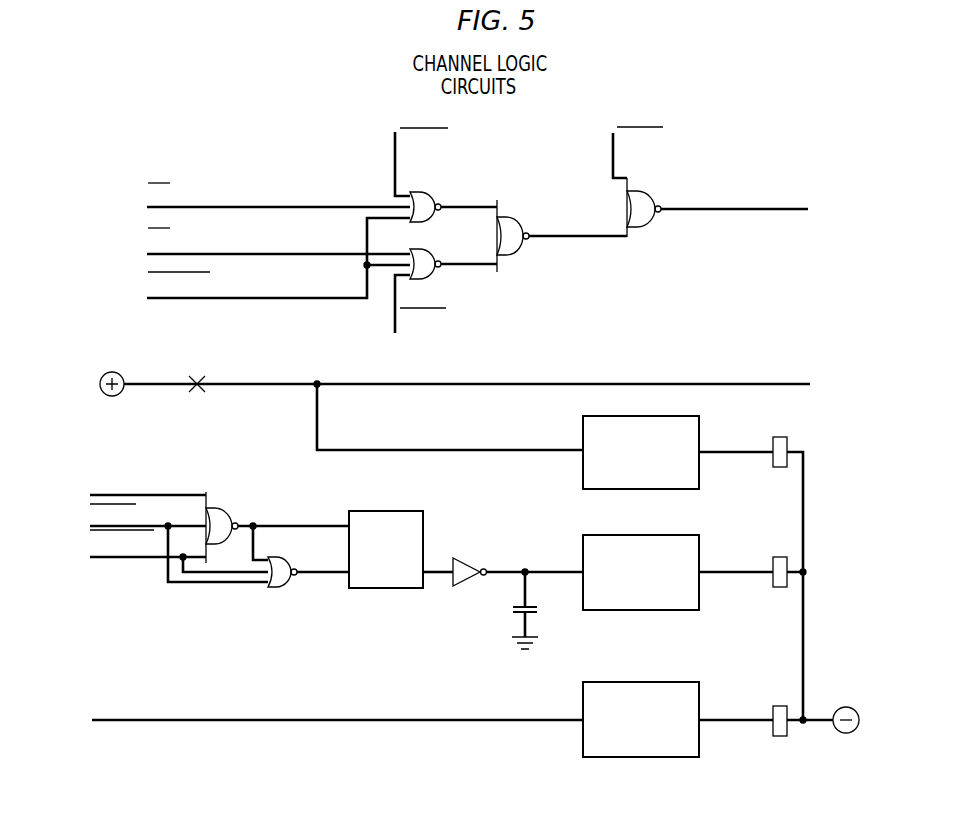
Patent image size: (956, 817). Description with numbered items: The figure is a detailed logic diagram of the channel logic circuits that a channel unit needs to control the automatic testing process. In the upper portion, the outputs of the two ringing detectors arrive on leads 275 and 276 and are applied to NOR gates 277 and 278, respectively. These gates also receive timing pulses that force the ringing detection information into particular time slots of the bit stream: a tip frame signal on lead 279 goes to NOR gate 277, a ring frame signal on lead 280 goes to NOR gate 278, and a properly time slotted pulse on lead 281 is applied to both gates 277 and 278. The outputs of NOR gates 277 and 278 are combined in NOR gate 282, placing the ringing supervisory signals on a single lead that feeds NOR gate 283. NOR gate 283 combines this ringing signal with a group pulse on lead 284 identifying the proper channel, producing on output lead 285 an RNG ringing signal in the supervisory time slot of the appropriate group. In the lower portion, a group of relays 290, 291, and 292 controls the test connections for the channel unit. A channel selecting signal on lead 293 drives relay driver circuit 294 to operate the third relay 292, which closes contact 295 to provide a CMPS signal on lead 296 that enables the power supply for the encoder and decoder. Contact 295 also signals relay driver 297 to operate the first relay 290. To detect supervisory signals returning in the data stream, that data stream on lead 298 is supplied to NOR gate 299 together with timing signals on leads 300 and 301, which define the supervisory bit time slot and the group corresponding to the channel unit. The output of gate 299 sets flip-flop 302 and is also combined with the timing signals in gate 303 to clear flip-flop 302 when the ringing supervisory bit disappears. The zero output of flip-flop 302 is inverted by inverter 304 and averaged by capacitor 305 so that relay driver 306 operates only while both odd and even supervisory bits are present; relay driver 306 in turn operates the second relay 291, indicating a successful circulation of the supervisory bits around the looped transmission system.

The lead 275 is at (395, 152).
The lead 276 is at (395, 328).
The NOR gate 277 is at (453, 196).
The NOR gate 278 is at (453, 256).
The lead 279 is at (244, 207).
The lead 280 is at (292, 254).
The lead 281 is at (258, 298).
The NOR gate 282 is at (562, 236).
The NOR gate 283 is at (649, 205).
The lead 284 is at (613, 152).
The output lead 285 is at (731, 209).
The K1 relay 290 is at (780, 462).
The K2 relay 291 is at (780, 582).
The K3 relay 292 is at (774, 732).
The lead 293 is at (337, 708).
The relay driver circuit 294 is at (652, 688).
The contact 295 is at (199, 383).
The lead 296 is at (455, 379).
The relay driver 297 is at (590, 427).
The lead 298 is at (150, 495).
The NOR gate 299 is at (277, 527).
The lead 300 is at (120, 557).
The lead 301 is at (192, 525).
The flip-flop 302 is at (388, 576).
The gate 303 is at (308, 585).
The inverter 304 is at (503, 564).
The capacitor 305 is at (506, 609).
The relay driver 306 is at (586, 546).